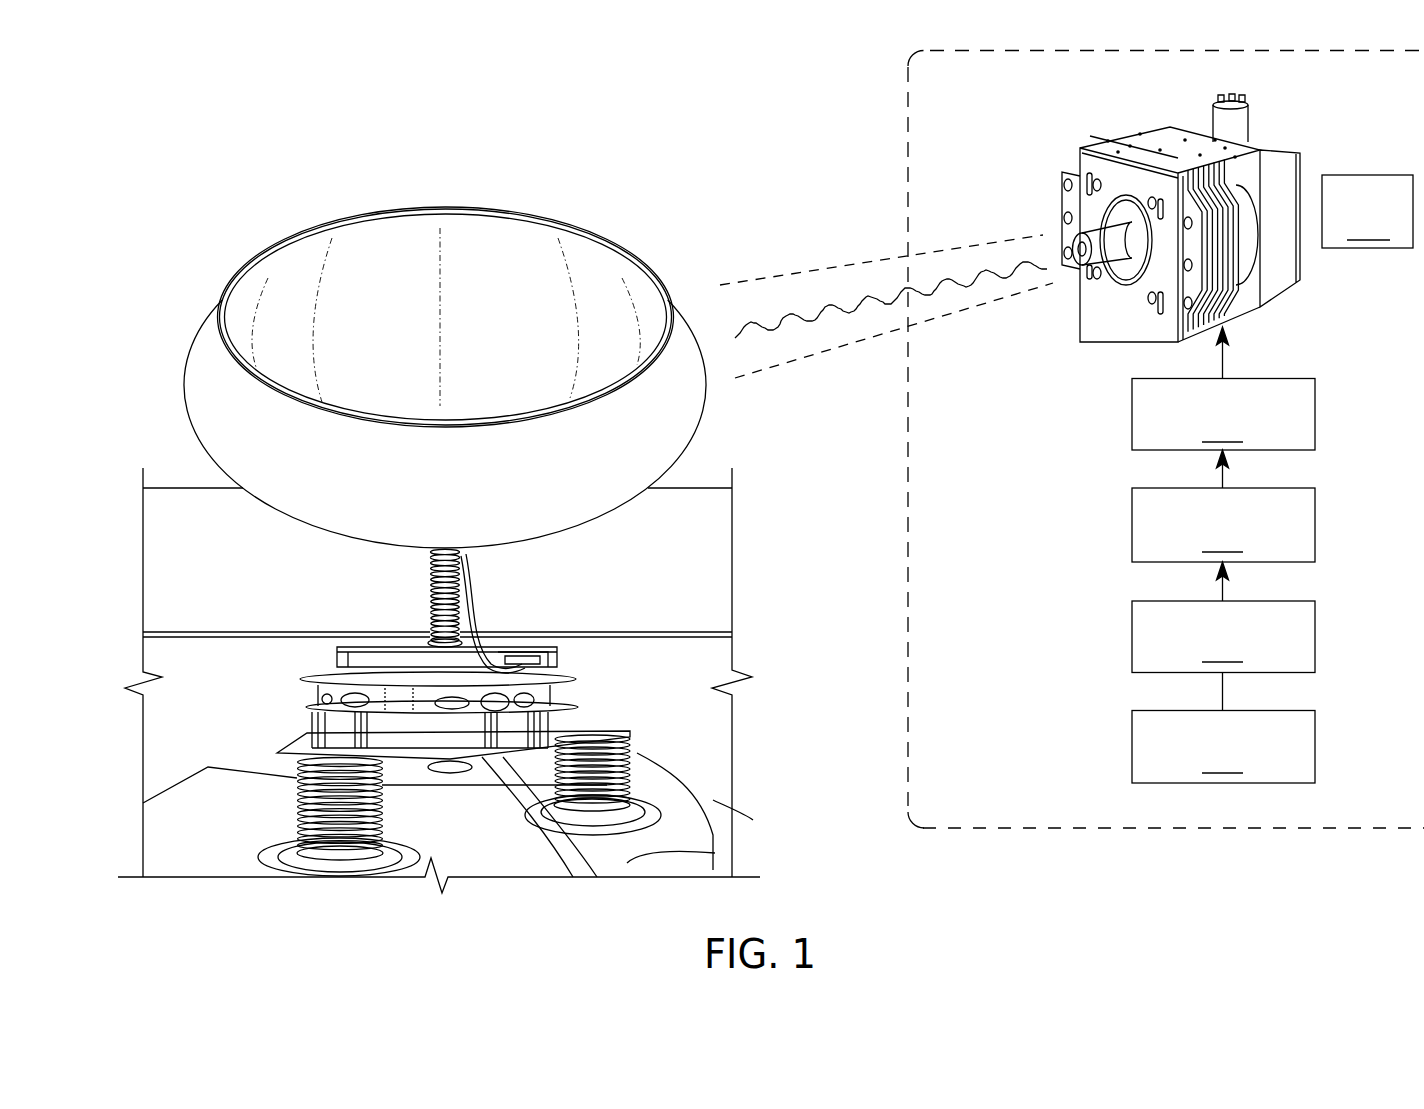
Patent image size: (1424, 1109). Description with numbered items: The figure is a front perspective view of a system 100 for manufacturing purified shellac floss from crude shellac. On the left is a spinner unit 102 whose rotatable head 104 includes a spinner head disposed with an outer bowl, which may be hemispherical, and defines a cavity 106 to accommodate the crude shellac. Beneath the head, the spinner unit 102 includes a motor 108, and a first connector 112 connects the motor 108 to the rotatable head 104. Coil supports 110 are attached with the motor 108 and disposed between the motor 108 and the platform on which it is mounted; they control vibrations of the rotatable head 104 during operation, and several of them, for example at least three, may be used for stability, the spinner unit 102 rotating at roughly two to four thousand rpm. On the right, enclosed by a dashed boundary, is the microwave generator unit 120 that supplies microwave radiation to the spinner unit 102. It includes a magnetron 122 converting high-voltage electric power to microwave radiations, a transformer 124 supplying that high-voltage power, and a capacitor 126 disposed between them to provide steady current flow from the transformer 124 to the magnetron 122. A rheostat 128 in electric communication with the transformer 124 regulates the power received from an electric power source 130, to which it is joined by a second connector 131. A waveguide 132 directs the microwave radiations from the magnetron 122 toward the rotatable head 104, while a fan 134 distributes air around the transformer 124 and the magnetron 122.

The system 100 is at (492, 496).
The spinner unit 102 is at (763, 713).
The rotatable head 104 is at (445, 349).
The cavity 106 is at (298, 266).
The motor 108 is at (588, 675).
The coil support 110 is at (690, 850).
The first connector 112 is at (477, 613).
The microwave generator unit 120 is at (908, 462).
The magnetron 122 is at (1163, 142).
The transformer 124 is at (1223, 506).
The capacitor 126 is at (1223, 388).
The rheostat 128 is at (1223, 617).
The electric power source 130 is at (1223, 747).
The power connection 131 is at (1222, 693).
The waveguide 132 is at (1022, 224).
The fan 134 is at (1367, 211).